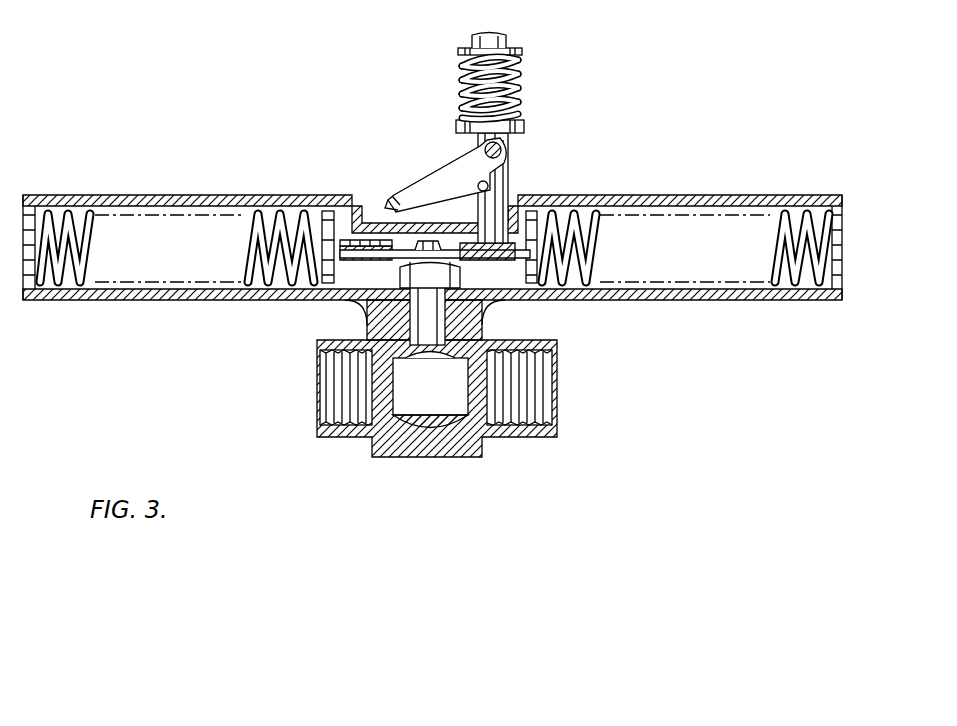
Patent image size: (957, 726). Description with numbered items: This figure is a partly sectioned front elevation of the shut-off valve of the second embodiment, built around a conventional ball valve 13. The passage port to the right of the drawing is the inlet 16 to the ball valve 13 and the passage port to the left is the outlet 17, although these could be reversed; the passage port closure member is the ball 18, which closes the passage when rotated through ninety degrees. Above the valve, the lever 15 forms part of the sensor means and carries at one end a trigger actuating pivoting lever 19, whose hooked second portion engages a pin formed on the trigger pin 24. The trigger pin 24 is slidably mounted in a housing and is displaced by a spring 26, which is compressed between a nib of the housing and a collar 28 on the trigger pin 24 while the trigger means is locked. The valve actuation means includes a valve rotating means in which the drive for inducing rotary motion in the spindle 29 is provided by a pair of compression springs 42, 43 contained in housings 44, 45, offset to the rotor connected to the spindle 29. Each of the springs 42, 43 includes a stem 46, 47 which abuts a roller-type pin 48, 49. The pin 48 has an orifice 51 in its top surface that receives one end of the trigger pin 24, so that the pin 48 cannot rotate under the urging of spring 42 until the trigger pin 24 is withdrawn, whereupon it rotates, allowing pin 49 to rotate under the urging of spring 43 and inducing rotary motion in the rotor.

The ball valve 13 is at (432, 391).
The lever 15 is at (413, 195).
The inlet 16 is at (538, 403).
The outlet 17 is at (328, 402).
The ball 18 is at (425, 423).
The trigger actuating pivoting lever 19 is at (452, 168).
The trigger pin 24 is at (520, 178).
The spring 26 is at (520, 90).
The collar 28 is at (520, 52).
The spindle 29 is at (427, 309).
The compression spring 42 is at (778, 232).
The compression spring 43 is at (262, 212).
The housing 44 is at (722, 300).
The housing 45 is at (98, 300).
The stem 46 is at (540, 200).
The stem 47 is at (328, 212).
The roller-type pin 48 is at (520, 245).
The roller-type pin 49 is at (366, 243).
The orifice 51 is at (495, 258).